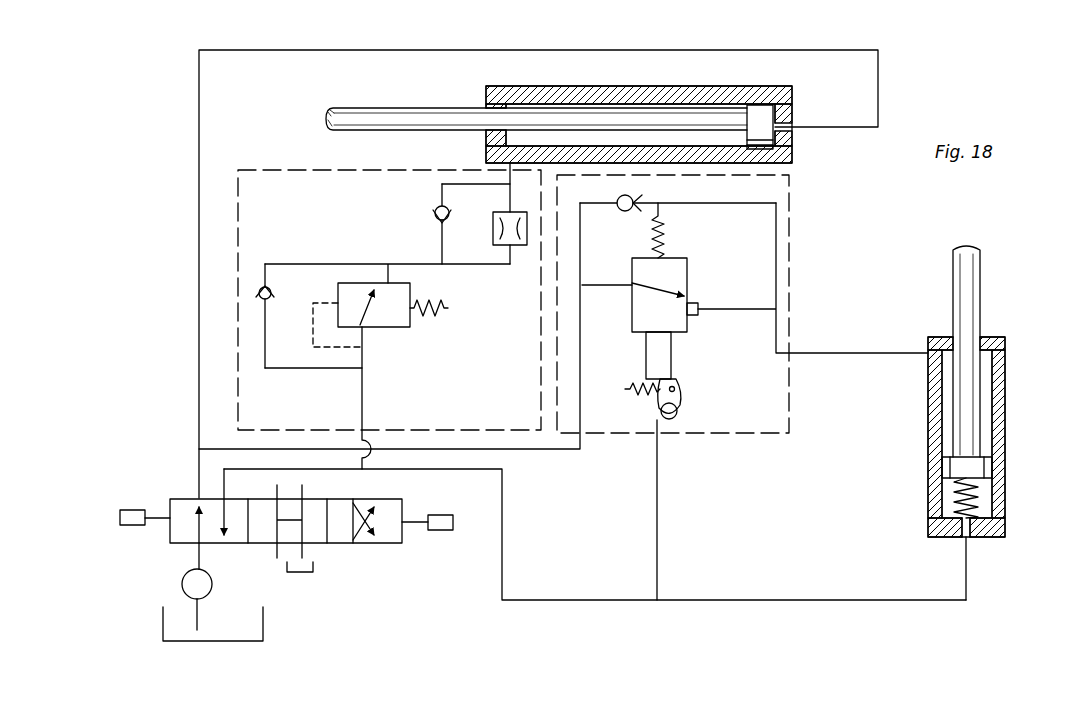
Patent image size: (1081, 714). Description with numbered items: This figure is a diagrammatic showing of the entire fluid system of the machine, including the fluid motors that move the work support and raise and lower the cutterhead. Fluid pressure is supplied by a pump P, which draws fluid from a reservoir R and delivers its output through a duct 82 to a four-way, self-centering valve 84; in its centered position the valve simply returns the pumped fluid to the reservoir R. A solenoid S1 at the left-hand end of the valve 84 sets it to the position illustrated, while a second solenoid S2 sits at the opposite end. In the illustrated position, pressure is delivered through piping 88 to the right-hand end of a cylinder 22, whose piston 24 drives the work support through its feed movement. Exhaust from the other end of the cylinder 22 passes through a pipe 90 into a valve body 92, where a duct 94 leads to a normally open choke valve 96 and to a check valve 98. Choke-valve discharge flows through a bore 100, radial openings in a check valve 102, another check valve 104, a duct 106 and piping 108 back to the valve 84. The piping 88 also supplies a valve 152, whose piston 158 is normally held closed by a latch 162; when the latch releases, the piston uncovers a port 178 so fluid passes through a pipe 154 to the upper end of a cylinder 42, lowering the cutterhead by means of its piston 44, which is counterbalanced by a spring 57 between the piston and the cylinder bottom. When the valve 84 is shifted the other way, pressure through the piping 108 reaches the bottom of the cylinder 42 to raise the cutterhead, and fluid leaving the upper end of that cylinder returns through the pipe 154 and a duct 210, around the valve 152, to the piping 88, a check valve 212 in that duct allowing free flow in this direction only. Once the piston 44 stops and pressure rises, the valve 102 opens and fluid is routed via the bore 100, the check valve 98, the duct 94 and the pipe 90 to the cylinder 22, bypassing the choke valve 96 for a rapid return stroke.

The cylinder 22 is at (790, 152).
The piston 24 is at (760, 120).
The cylinder 42 is at (996, 408).
The piston 44 is at (966, 310).
The spring 57 is at (993, 504).
The duct 82 is at (201, 546).
The four-way, self-centering valve 84 is at (358, 557).
The piping 88 is at (203, 127).
The pipe 90 is at (508, 165).
The valve body 92 is at (285, 168).
The duct 94 is at (507, 192).
The choke valve 96 is at (510, 250).
The check valve 98 is at (437, 207).
The bore 100 is at (378, 264).
The check valve 102 is at (412, 330).
The check valve 104 is at (272, 300).
The duct 106 is at (268, 352).
The piping 108 is at (364, 418).
The valve 152 is at (793, 262).
The pipe 154 is at (810, 355).
The piston 158 is at (644, 357).
The latch 162 is at (680, 406).
The port 178 is at (692, 304).
The duct 210 is at (642, 208).
The check valve 212 is at (640, 196).
The solenoid S1 is at (134, 510).
The solenoid S2 is at (438, 515).
The pump P is at (182, 584).
The reservoir R is at (264, 620).